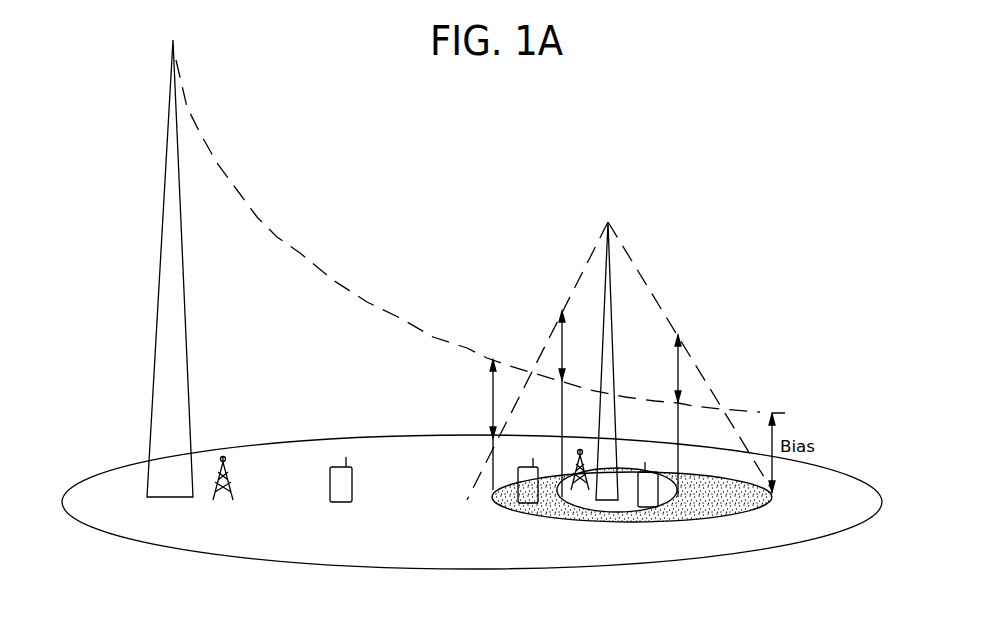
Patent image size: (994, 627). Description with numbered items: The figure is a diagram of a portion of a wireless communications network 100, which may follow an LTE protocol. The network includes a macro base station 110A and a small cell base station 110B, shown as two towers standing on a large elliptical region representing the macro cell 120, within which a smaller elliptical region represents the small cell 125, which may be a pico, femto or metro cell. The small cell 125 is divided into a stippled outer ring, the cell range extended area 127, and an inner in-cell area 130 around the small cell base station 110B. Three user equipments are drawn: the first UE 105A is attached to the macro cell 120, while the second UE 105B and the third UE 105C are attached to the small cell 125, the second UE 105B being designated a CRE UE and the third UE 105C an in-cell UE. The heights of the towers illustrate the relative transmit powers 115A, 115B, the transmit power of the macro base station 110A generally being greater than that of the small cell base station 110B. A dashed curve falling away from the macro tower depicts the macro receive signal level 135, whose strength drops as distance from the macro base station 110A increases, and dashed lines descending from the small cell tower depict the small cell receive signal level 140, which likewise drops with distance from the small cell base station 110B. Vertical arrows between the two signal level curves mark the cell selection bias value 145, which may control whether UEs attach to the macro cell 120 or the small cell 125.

The wireless communications network 100 is at (94, 80).
The first UE 105A is at (330, 488).
The second UE 105B is at (516, 503).
The third UE 105C is at (654, 466).
The macro base station 110A is at (237, 490).
The small cell base station 110B is at (583, 457).
The transmit power of macro base station 115A is at (182, 258).
The transmit power of small cell base station 115B is at (615, 325).
The macro cell 120 is at (413, 557).
The small cell 125 is at (548, 522).
The cell range extended area 127 is at (632, 495).
The in-cell area 130 is at (631, 513).
The macro receive signal level 135 is at (232, 178).
The small cell receive signal level 140 is at (593, 244).
The cell selection bias value 145 is at (492, 401).